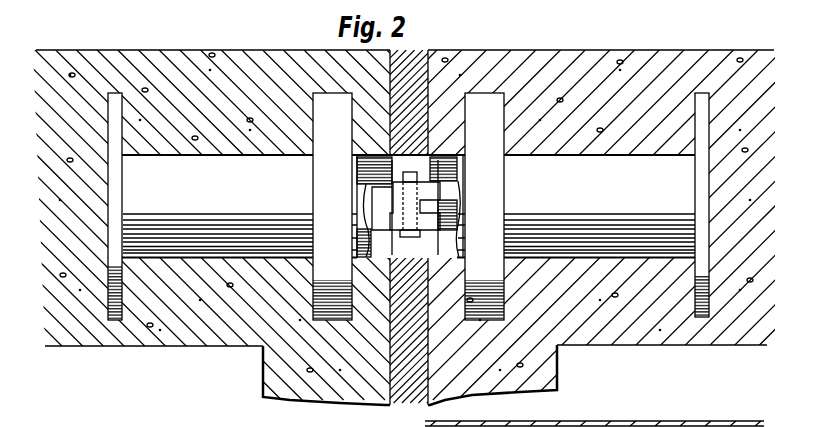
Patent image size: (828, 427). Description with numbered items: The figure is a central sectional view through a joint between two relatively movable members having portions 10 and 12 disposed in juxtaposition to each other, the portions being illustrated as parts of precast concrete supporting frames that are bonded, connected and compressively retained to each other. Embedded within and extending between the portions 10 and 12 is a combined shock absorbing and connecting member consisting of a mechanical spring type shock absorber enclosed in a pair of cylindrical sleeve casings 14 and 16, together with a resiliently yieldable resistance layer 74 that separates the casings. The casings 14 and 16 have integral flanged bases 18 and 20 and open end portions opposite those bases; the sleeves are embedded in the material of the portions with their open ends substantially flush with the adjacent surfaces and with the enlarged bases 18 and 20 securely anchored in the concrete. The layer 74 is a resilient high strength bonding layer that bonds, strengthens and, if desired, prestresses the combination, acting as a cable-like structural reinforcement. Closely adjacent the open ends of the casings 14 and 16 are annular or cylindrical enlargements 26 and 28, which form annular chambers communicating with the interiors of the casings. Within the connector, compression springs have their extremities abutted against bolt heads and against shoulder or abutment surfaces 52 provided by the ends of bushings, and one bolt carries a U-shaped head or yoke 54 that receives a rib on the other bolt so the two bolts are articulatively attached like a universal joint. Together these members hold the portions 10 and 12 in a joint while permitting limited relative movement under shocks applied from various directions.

The portion 10 is at (287, 62).
The portion 12 is at (478, 58).
The resiliently yieldable resistance layer 74 is at (416, 57).
The casing 14 is at (239, 206).
The casing 16 is at (576, 206).
The flanged base 18 is at (118, 188).
The flanged base 20 is at (697, 188).
The annular enlargement 26 is at (328, 197).
The annular enlargement 28 is at (489, 203).
The abutment surface 52 is at (385, 204).
The yoke 54 is at (437, 202).